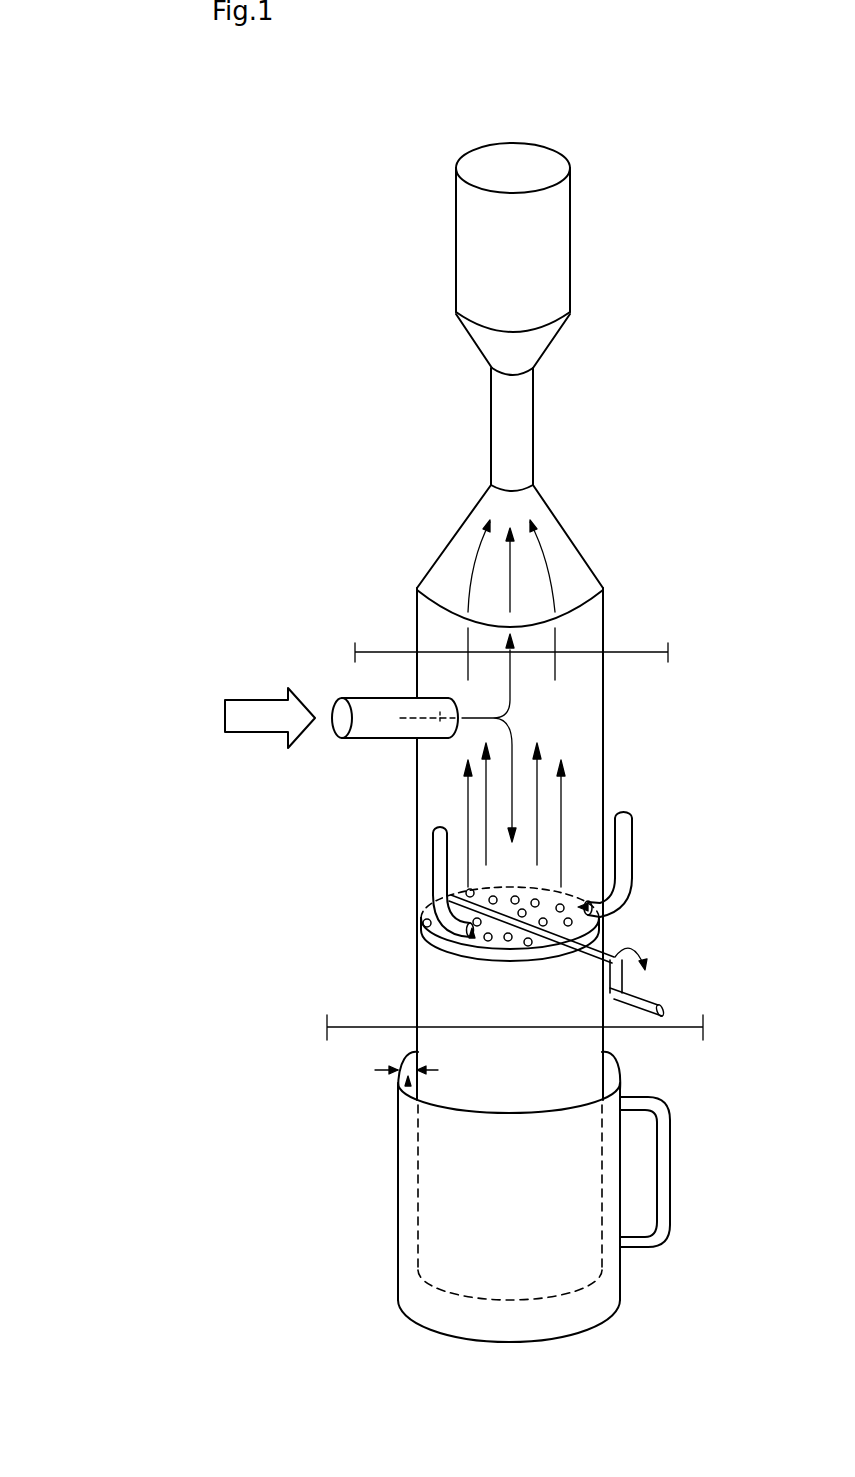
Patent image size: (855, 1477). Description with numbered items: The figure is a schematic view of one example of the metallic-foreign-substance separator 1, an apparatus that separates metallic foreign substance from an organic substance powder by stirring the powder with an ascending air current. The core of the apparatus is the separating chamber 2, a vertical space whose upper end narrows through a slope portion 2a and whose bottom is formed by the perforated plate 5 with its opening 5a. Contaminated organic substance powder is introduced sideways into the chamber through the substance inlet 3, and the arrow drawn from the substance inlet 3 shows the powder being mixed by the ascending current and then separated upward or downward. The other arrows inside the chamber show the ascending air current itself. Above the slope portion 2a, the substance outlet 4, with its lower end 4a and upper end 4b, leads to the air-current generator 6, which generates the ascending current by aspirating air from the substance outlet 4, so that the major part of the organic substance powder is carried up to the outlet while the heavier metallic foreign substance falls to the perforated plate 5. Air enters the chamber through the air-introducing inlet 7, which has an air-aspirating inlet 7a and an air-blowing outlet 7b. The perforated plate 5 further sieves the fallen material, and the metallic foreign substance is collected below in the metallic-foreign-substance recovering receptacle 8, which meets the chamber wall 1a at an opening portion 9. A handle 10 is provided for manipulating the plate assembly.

The metallic-foreign-substance separator 1 is at (355, 535).
The cylindrical body wall 1a is at (417, 883).
The separating chamber 2 is at (583, 722).
The slope portion 2a is at (553, 521).
The substance inlet 3 is at (365, 732).
The substance outlet 4 is at (525, 405).
The lower opening of tube 4a is at (540, 484).
The upper opening of tube 4b is at (483, 370).
The perforated plate 5 is at (575, 878).
The opening 5a is at (520, 958).
The air-current generator 6 is at (557, 218).
The air-introducing inlet 7 is at (432, 881).
The air-aspirating inlet 7a is at (437, 823).
The air-blowing outlet 7b is at (458, 945).
The metallic-foreign-substance recovering receptacle 8 is at (398, 1178).
The opening portion 9 is at (400, 1092).
The handle 10 is at (640, 982).